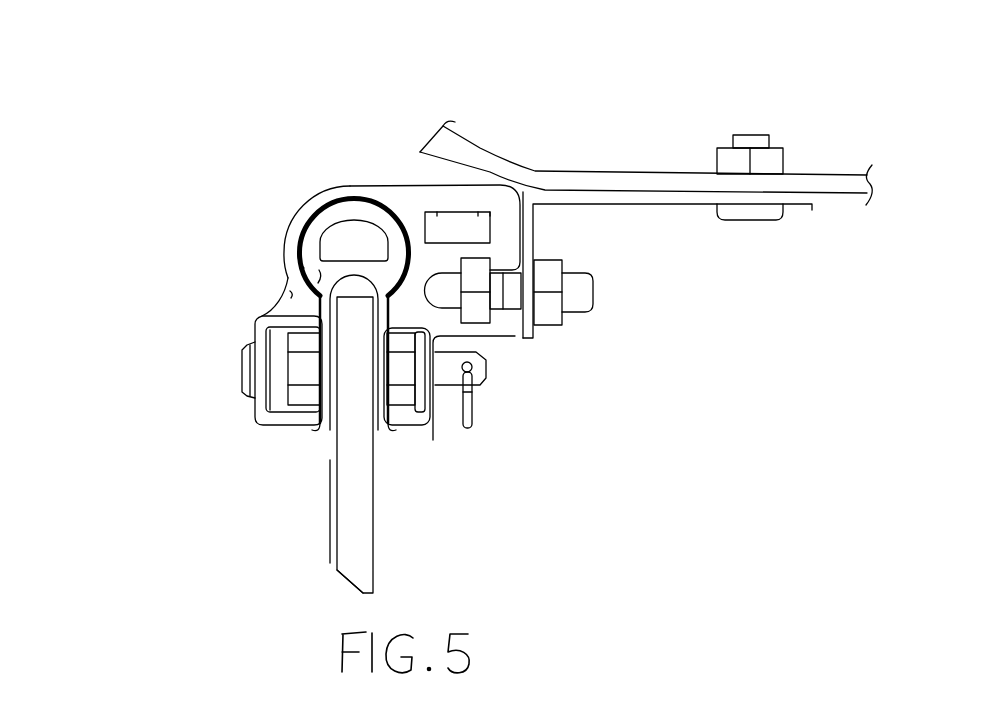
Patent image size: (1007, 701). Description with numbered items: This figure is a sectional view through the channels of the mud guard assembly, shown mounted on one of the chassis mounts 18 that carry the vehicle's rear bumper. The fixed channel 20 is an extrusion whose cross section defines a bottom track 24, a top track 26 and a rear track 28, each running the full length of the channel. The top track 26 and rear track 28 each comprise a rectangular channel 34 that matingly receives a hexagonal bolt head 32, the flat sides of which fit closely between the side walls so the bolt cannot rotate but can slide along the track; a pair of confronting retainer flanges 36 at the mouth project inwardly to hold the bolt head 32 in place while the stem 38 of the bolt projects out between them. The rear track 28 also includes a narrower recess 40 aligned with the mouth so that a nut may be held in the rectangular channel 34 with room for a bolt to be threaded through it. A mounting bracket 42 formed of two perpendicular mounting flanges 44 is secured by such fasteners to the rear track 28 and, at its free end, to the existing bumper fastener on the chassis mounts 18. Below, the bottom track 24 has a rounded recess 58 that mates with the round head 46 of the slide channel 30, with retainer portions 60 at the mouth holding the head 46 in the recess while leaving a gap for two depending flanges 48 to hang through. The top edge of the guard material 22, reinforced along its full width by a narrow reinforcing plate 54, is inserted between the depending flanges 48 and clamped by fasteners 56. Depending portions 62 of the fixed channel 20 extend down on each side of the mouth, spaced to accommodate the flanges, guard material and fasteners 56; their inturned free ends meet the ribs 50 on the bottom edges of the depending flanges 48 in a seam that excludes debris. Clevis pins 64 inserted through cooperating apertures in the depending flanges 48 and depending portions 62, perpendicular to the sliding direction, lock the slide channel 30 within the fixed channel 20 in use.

The chassis mounts 18 is at (512, 173).
The fixed channel 20 is at (400, 205).
The guard material 22 is at (367, 530).
The bottom track 24 is at (294, 446).
The top track 26 is at (457, 228).
The rear track 28 is at (504, 317).
The slide channel 30 is at (315, 267).
The bolt head 32 is at (472, 280).
The rectangular channel 34 is at (490, 213).
The retainer flanges 36 is at (437, 213).
The stem 38 is at (580, 302).
The recess 40 is at (433, 270).
The mounting bracket 42 is at (672, 204).
The mounting flanges 44 is at (530, 237).
The round head 46 is at (317, 280).
The depending flanges 48 is at (380, 342).
The ribs 50 is at (320, 428).
The reinforcing plate 54 is at (330, 542).
The fasteners 56 is at (303, 383).
The rounded recess 58 is at (295, 210).
The retainer portions 60 is at (293, 292).
The depending portions 62 is at (259, 405).
The clevis pins 64 is at (480, 368).